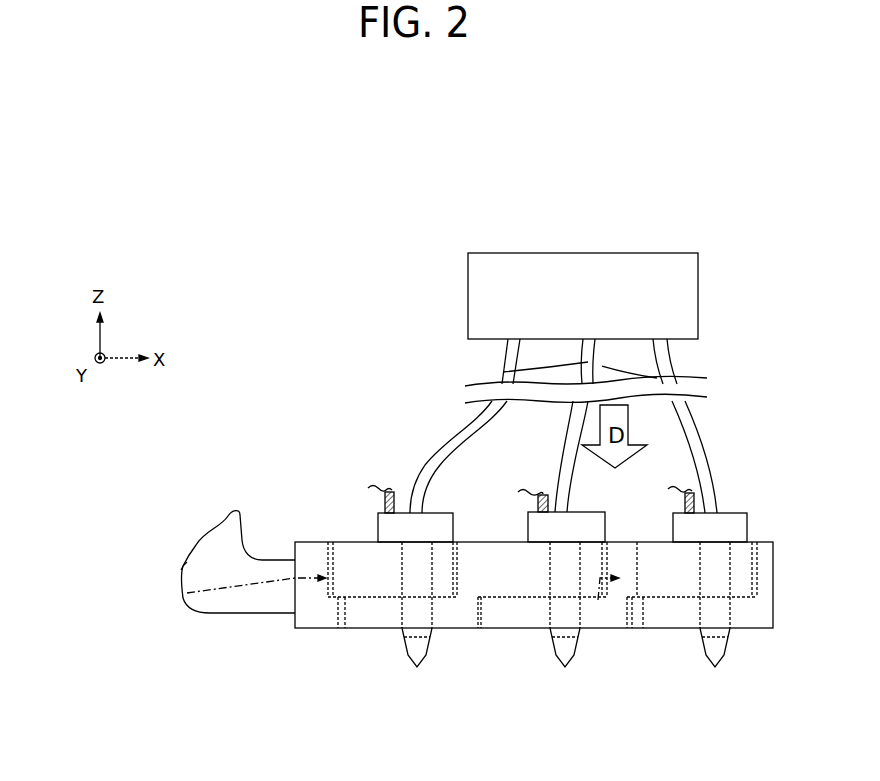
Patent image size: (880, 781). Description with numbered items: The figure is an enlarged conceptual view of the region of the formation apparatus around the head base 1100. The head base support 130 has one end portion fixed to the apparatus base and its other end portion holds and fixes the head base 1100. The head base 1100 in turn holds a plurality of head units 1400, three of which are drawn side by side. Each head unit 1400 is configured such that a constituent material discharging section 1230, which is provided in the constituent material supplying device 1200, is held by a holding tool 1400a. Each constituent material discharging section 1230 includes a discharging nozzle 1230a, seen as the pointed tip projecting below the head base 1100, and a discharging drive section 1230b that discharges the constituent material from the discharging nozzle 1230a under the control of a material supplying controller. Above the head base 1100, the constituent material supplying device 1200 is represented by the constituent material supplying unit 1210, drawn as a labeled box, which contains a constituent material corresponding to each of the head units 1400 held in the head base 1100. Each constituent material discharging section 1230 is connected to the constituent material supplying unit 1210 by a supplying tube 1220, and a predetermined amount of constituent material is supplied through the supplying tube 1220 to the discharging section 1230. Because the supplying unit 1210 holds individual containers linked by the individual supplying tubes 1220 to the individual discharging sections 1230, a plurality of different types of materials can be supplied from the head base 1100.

The constituent material supplying device 1200 is at (748, 152).
The constituent material supplying unit 1210 is at (508, 253).
The supplying tube 1220 is at (502, 370).
The constituent material discharging section 1230 is at (783, 197).
The discharging nozzle 1230a is at (713, 608).
The discharging drive section 1230b is at (732, 522).
The head base 1100 is at (473, 612).
The head unit 1400 is at (100, 567).
The holding tool 1400a is at (187, 592).
The head base support 130 is at (282, 562).